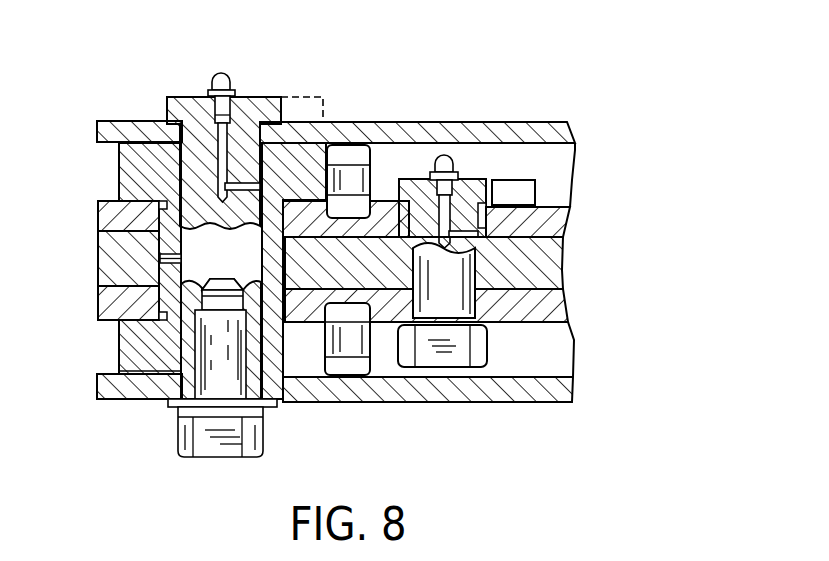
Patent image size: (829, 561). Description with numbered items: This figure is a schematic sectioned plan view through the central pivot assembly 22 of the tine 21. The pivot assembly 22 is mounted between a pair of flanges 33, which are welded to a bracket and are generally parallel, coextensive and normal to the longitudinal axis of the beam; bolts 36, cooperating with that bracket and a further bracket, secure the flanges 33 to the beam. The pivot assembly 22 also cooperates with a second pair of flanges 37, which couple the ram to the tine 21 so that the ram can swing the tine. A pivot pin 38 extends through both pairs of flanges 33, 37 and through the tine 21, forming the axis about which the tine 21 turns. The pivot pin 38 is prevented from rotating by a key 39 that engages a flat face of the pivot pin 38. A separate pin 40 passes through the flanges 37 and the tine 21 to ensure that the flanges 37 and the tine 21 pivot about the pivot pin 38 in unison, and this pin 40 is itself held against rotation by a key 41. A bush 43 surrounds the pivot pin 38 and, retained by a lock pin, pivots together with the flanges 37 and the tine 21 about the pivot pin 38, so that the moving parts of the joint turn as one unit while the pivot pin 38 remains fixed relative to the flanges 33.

The tine 21 is at (548, 270).
The pivot assembly 22 is at (342, 242).
The flanges 33 is at (562, 138).
The bolts 36 is at (358, 177).
The flanges 37 is at (557, 224).
The pivot pin 38 is at (249, 113).
The key 39 is at (314, 103).
The pin 40 is at (462, 307).
The key 41 is at (528, 197).
The bush 43 is at (130, 171).